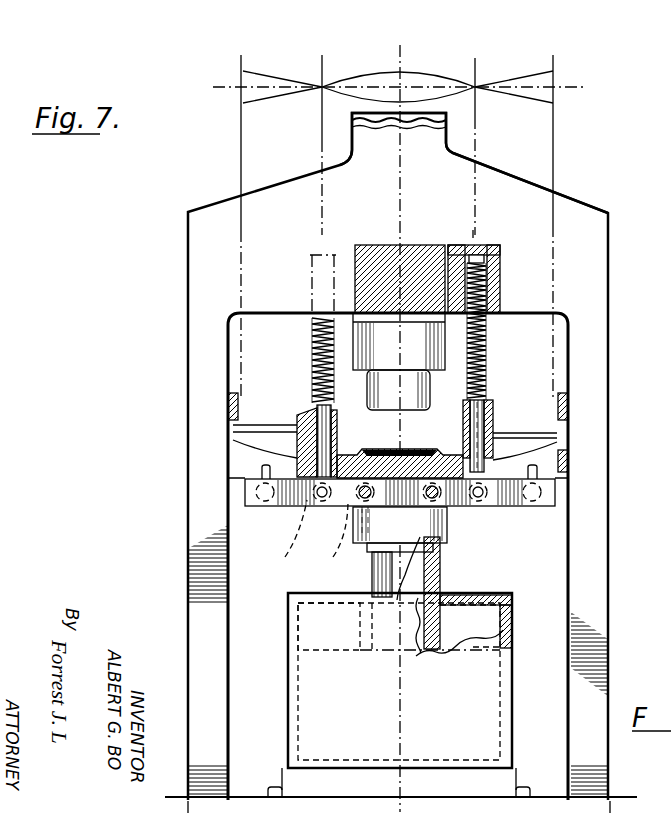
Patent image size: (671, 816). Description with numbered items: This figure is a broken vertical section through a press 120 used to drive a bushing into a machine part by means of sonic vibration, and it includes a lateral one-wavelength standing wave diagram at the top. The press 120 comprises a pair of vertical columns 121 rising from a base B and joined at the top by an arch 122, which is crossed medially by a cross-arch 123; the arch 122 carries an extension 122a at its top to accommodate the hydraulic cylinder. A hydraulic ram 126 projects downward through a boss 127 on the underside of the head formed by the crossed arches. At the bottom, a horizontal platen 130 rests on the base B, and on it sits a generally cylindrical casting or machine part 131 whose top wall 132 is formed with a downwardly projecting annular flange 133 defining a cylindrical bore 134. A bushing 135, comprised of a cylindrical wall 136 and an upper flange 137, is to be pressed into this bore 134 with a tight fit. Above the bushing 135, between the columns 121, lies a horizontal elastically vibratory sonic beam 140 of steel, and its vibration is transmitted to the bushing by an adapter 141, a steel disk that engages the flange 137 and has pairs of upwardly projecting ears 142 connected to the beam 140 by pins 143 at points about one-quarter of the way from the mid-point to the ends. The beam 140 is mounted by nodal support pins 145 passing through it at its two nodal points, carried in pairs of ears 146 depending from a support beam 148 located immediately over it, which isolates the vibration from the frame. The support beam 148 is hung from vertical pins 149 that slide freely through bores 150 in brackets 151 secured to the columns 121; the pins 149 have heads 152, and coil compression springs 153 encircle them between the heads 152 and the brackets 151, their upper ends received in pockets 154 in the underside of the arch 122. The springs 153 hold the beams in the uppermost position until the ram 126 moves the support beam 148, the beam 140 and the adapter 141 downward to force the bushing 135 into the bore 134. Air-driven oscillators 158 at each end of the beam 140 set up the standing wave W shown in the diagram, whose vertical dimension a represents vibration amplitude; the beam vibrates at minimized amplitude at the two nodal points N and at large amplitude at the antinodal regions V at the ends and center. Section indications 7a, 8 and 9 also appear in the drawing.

The press 120 is at (184, 247).
The vertical legs or columns 121 is at (203, 353).
The arch 122 is at (517, 190).
The extension 122a is at (447, 128).
The cross-arch 123 is at (421, 236).
The hydraulic ram 126 is at (395, 392).
The boss 127 is at (386, 352).
The horizontal platen 130 is at (520, 772).
The casting or machine part 131 is at (513, 702).
The top wall 132 is at (508, 592).
The annular flange or boss 133 is at (444, 618).
The cylindrical bore 134 is at (418, 650).
The bushing 135 is at (441, 582).
The cylindrical wall 136 is at (383, 575).
The flange 137 is at (448, 538).
The sonic beam 140 is at (508, 501).
The adapter 141 is at (448, 519).
The ears 142 is at (343, 536).
The pins 143 is at (361, 536).
The nodal support pins 145 is at (319, 490).
The ears 146 is at (290, 546).
The support beam 148 is at (455, 455).
The vertical pins 149 is at (298, 425).
The vertical bores 150 is at (335, 437).
The brackets 151 is at (505, 415).
The heads 152 is at (478, 246).
The coil compression springs 153 is at (311, 357).
The pockets or wells 154 is at (490, 298).
The air-driven oscillators 158 is at (268, 502).
The section line 7a is at (302, 457).
The section line 8- 8 is at (186, 480).
The view direction 9 is at (372, 53).
The vertical dimension a is at (333, 95).
The lateral standing wave W is at (486, 82).
The antinodal regions V is at (385, 92).
The nodal points N is at (500, 109).
The base B is at (250, 797).